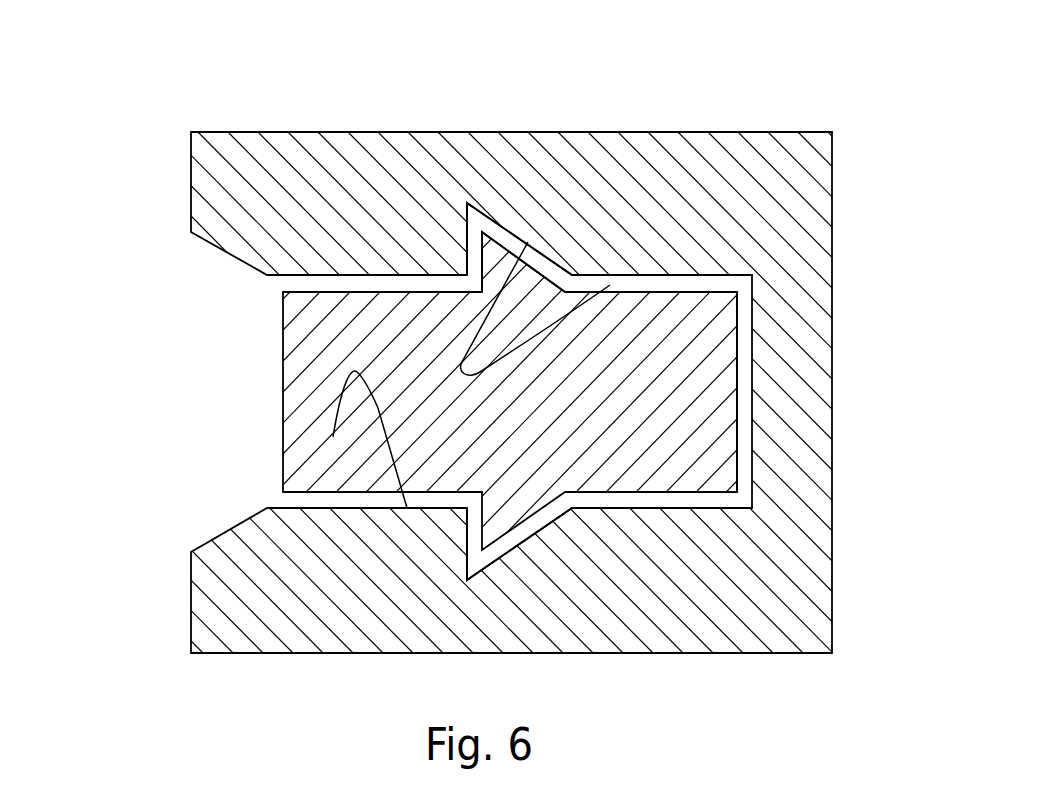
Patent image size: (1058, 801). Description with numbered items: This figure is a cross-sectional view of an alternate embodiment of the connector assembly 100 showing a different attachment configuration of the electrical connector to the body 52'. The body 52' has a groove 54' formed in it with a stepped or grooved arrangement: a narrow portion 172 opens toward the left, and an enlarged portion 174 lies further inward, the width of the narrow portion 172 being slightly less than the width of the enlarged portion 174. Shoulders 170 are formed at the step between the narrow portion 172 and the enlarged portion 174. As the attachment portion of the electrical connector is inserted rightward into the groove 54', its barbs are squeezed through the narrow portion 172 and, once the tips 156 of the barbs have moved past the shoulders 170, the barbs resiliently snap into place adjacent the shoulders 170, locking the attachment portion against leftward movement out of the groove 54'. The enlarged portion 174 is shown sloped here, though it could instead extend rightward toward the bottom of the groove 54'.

The body 52' is at (529, 392).
The groove 54' is at (519, 477).
The seal assembly 100 is at (745, 367).
The tips 156 is at (490, 221).
The shoulders 170 is at (481, 232).
The narrow portion 172 is at (348, 273).
The enlarged portion 174 is at (610, 285).